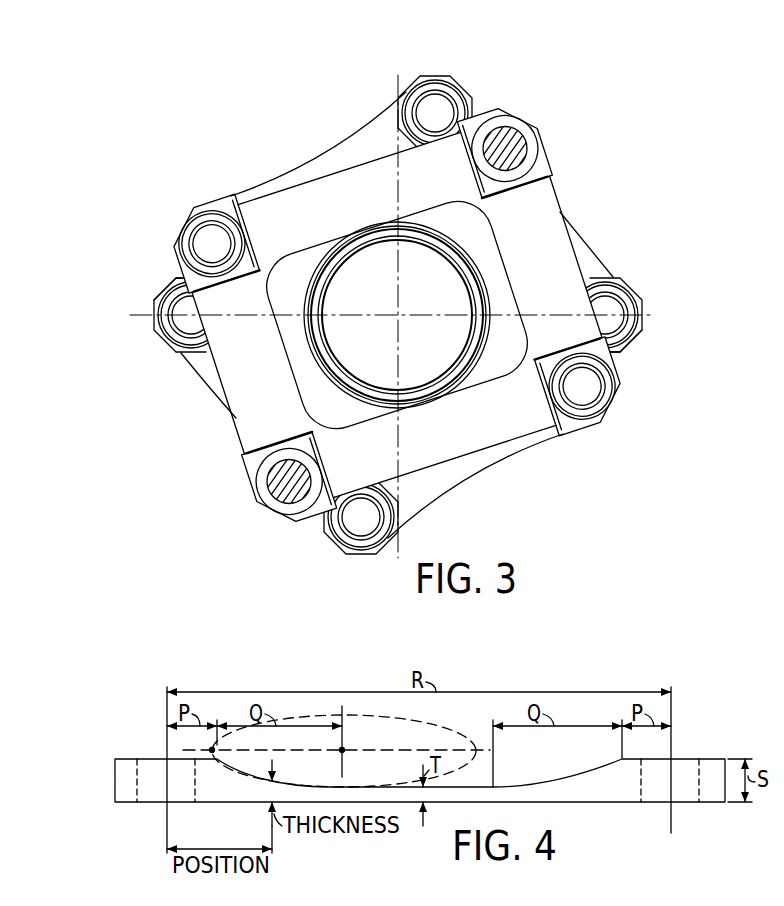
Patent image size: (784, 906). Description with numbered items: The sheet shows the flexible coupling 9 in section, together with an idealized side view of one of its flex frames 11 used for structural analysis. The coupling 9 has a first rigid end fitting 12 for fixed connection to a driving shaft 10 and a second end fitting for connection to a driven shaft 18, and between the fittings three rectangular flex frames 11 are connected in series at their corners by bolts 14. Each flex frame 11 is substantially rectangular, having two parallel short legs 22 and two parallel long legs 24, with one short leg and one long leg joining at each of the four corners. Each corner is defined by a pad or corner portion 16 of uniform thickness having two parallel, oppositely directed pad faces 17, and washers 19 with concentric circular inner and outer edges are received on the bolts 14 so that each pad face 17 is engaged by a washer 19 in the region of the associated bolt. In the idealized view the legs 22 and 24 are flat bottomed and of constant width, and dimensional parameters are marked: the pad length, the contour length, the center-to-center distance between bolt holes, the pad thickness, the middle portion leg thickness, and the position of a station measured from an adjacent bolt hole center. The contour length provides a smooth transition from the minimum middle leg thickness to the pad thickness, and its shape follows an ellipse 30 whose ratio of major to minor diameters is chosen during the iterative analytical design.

In FIG. 3, the flexible coupling 9 is at (512, 90).
In FIG. 3, the driving shaft 10 is at (317, 273).
In FIG. 3, the flex frame 11 is at (332, 152).
In FIG. 4, the flex frame 11 is at (115, 777).
In FIG. 3, the first rigid end fitting 12 is at (170, 282).
In FIG. 3, the bolt 14 is at (438, 110).
In FIG. 3, the pad or corner portion 16 is at (212, 203).
In FIG. 4, the pad or corner portion 16 is at (128, 758).
In FIG. 3, the pad face 17 is at (613, 365).
In FIG. 3, the driven shaft 18 is at (443, 207).
In FIG. 3, the washer 19 is at (533, 157).
In FIG. 3, the short leg 22 is at (558, 225).
In FIG. 3, the long leg 24 is at (300, 193).
In FIG. 4, the ellipse 30 is at (414, 719).